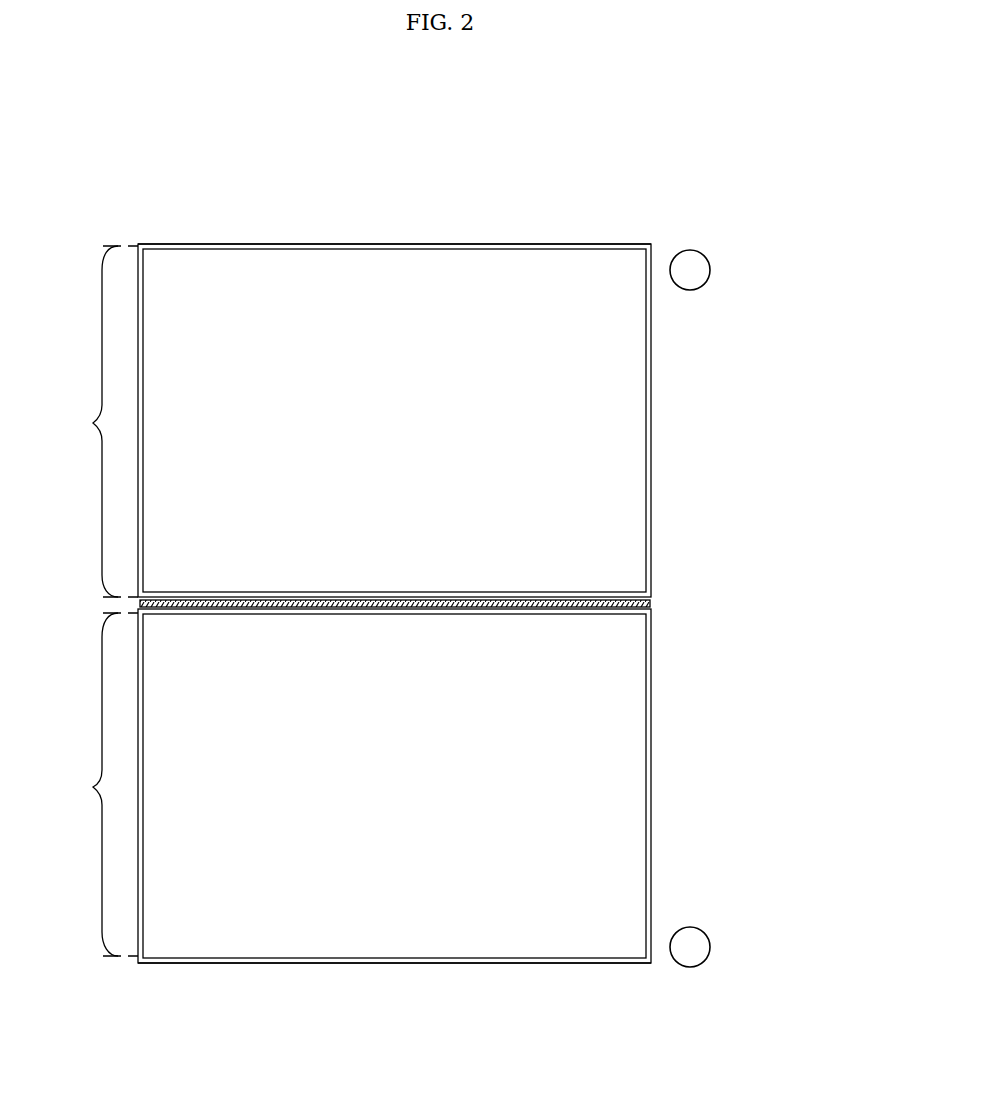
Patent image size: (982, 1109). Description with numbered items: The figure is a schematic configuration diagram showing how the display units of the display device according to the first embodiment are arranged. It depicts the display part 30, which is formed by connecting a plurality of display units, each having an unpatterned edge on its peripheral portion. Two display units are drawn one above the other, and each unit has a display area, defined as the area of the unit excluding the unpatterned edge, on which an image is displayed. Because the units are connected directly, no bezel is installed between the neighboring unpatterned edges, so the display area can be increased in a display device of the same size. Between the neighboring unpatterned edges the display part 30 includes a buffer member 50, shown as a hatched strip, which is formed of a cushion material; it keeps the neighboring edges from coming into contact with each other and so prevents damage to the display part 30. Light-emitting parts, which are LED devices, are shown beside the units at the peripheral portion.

The display part 30 is at (626, 191).
The buffer member 50 is at (610, 599).